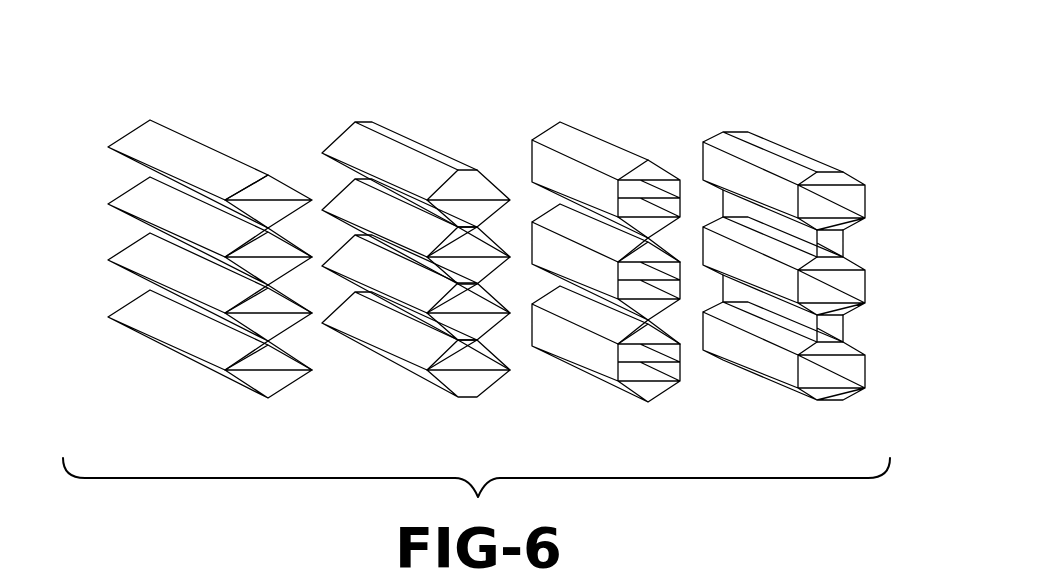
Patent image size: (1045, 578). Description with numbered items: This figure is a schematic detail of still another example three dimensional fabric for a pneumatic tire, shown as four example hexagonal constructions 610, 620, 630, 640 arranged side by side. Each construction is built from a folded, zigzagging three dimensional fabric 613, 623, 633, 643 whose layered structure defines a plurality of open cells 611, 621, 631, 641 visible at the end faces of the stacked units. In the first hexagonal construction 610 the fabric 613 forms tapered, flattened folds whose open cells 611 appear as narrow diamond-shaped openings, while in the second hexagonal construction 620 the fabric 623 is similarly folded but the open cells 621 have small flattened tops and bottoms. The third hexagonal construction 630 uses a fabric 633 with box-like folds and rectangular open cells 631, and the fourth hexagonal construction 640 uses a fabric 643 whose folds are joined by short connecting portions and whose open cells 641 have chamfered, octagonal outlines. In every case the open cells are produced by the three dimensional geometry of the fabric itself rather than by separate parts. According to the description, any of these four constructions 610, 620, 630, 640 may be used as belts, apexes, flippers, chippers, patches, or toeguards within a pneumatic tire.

The hexagonal construction 610 is at (177, 207).
The open cell 611 is at (258, 193).
The fabric 613 is at (150, 307).
The hexagonal construction 620 is at (397, 212).
The open cell 621 is at (466, 190).
The fabric 623 is at (373, 322).
The hexagonal construction 630 is at (578, 221).
The open cell 631 is at (662, 183).
The fabric 633 is at (582, 340).
The hexagonal construction 640 is at (775, 226).
The open cell 641 is at (850, 195).
The fabric 643 is at (748, 340).